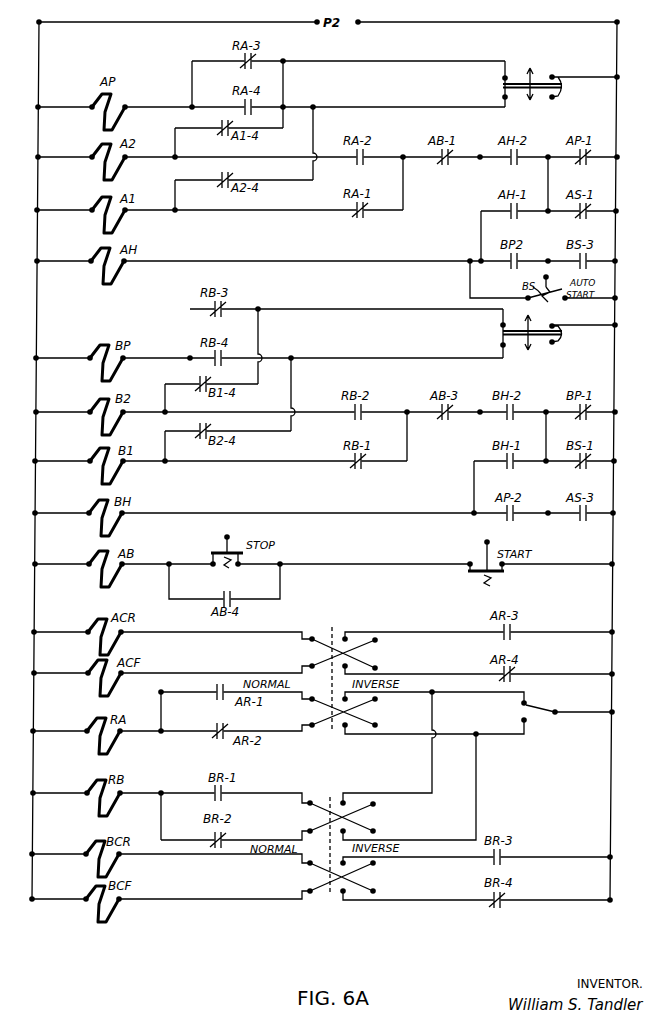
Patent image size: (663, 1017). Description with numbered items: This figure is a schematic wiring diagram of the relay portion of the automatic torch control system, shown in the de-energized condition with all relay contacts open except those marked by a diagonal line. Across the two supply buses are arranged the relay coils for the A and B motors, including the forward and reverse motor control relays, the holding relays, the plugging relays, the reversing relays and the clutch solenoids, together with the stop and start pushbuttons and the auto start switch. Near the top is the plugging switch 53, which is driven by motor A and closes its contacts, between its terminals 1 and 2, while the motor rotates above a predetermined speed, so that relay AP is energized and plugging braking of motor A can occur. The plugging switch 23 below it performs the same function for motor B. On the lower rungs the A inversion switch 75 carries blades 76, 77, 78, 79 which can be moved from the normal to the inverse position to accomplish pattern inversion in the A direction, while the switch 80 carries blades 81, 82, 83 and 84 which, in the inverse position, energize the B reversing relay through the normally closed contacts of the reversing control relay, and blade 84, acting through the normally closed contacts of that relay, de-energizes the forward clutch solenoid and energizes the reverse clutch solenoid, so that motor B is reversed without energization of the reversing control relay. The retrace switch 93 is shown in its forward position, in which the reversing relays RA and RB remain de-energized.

The plugging switch 53 is at (540, 70).
The plugging switch 23 is at (537, 325).
The switch terminal 1 is at (529, 185).
The switch terminal 2 is at (529, 229).
The switch blade 76 is at (314, 635).
The A inversion switch 75 is at (377, 642).
The switch blade 77 is at (319, 669).
The switch blade 78 is at (327, 696).
The switch blade 79 is at (331, 732).
The switch blade 81 is at (319, 801).
The inversion switch 80 is at (375, 836).
The switch blade 82 is at (326, 837).
The switch blade 83 is at (316, 871).
The switch blade 84 is at (323, 896).
The retrace switch 93 is at (560, 710).